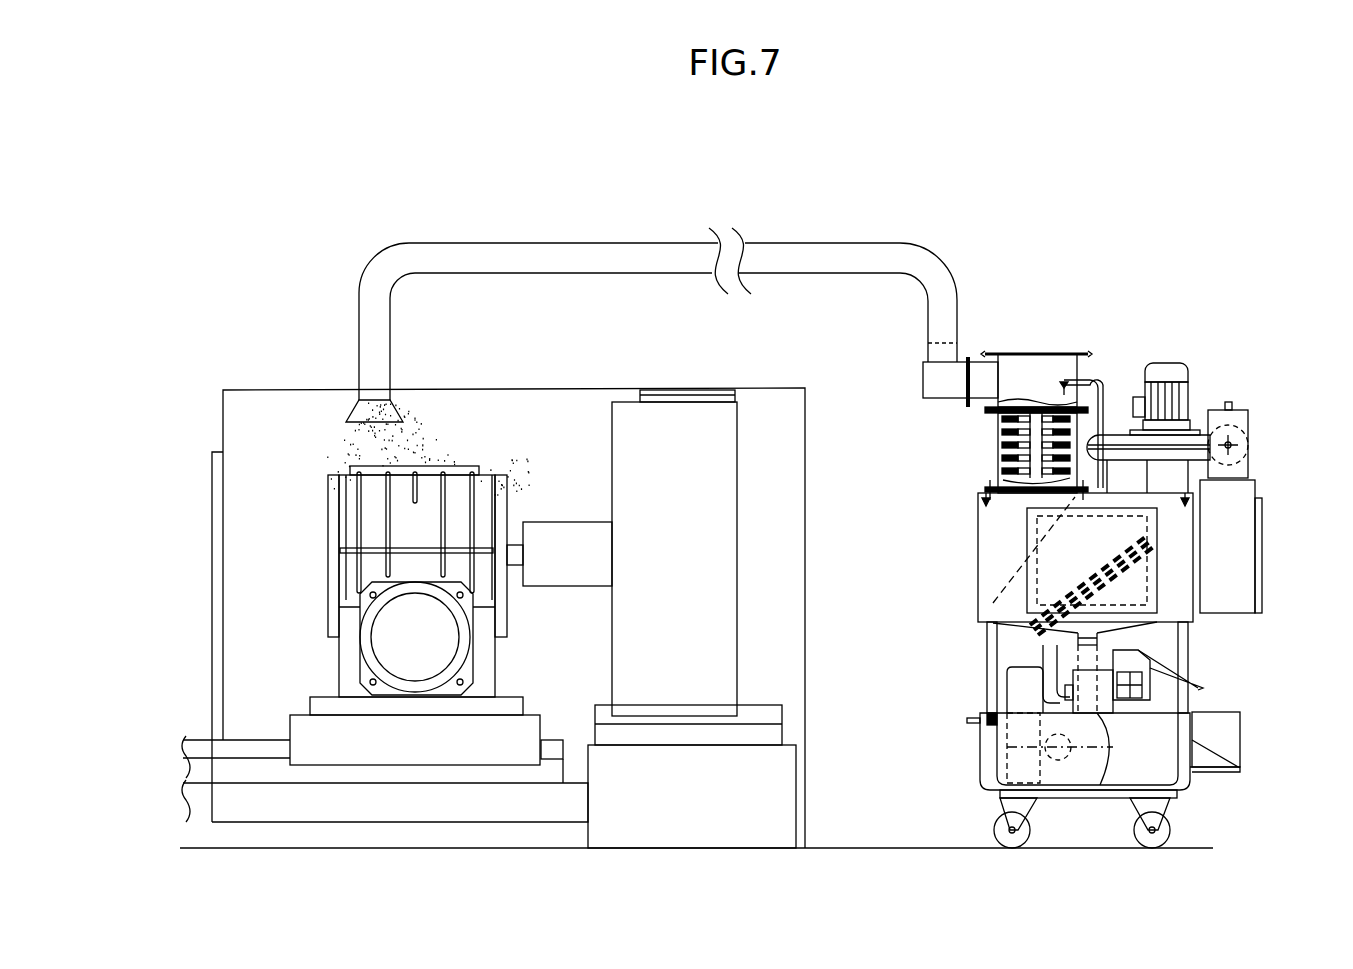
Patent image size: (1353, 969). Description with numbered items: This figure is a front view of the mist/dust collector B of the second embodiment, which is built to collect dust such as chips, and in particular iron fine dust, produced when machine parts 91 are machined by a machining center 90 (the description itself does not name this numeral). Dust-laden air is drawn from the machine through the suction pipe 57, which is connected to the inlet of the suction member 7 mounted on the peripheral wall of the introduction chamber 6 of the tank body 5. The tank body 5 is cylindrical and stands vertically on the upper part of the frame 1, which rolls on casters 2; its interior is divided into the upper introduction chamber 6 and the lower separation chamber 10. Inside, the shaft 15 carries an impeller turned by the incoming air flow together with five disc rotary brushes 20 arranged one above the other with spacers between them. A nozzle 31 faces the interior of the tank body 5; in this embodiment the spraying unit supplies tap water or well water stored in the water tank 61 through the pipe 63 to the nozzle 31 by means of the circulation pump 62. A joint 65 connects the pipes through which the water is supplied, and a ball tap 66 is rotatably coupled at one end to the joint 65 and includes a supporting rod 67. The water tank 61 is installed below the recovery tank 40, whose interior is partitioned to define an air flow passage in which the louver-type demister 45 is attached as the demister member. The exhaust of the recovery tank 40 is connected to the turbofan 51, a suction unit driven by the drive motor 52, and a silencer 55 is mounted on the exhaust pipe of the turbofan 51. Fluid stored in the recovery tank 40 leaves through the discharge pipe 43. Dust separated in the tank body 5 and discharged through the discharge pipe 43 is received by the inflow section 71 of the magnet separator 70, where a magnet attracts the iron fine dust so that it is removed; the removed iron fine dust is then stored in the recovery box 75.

The frame 1 is at (990, 643).
The casters 2 is at (1160, 810).
The tank body 5 is at (996, 425).
The introduction chamber 6 is at (1032, 358).
The suction member 7 is at (977, 370).
The separation chamber 10 is at (1000, 435).
The shaft 15 is at (1000, 452).
The disc rotary brushes 20 is at (1000, 468).
The nozzle 31 is at (1064, 380).
The recovery tank 40 is at (990, 548).
The discharge pipe 43 is at (1097, 637).
The louver-type demister 45 is at (1070, 590).
The turbofan 51 is at (1191, 437).
The drive motor 52 is at (1183, 363).
The silencer 55 is at (1248, 513).
The suction pipe 57 is at (797, 242).
The water tank 61 is at (1123, 780).
The circulation pump 62 is at (1012, 680).
The pipe 63 is at (1104, 385).
The joint 65 is at (985, 720).
The ball tap 66 is at (1045, 757).
The supporting rod 67 is at (1020, 745).
The magnet separator 70 is at (1152, 668).
The inflow section 71 is at (1084, 660).
The recovery box 75 is at (1236, 725).
The machine tool 90 is at (279, 377).
The machine parts 91 is at (328, 515).
The mist/dust collector B is at (1119, 328).